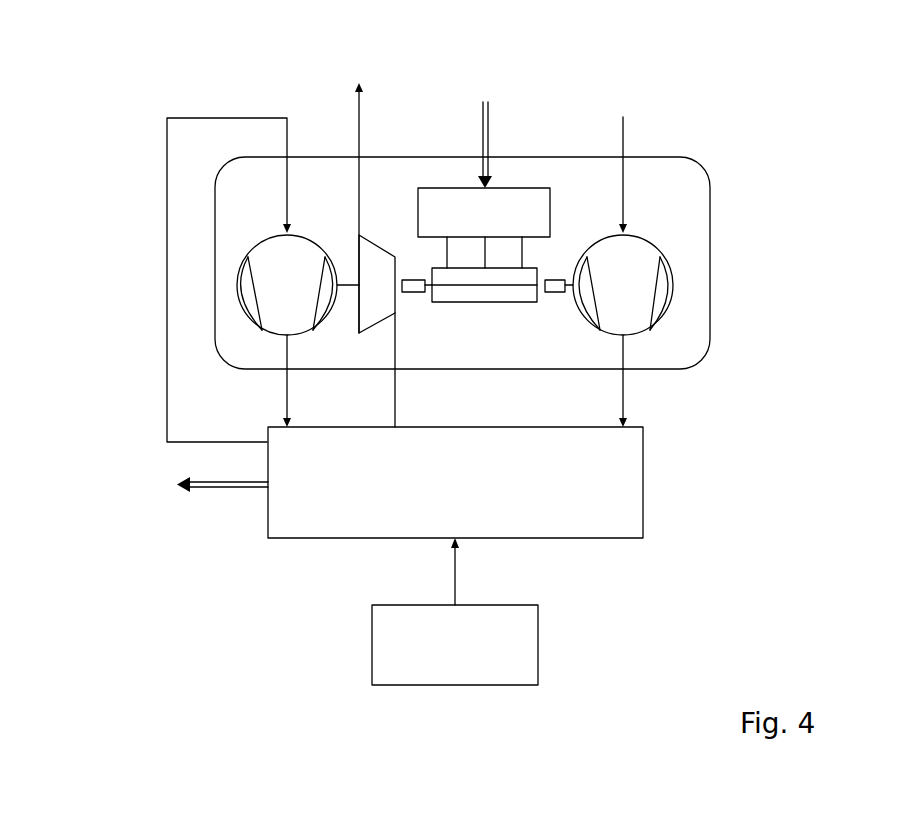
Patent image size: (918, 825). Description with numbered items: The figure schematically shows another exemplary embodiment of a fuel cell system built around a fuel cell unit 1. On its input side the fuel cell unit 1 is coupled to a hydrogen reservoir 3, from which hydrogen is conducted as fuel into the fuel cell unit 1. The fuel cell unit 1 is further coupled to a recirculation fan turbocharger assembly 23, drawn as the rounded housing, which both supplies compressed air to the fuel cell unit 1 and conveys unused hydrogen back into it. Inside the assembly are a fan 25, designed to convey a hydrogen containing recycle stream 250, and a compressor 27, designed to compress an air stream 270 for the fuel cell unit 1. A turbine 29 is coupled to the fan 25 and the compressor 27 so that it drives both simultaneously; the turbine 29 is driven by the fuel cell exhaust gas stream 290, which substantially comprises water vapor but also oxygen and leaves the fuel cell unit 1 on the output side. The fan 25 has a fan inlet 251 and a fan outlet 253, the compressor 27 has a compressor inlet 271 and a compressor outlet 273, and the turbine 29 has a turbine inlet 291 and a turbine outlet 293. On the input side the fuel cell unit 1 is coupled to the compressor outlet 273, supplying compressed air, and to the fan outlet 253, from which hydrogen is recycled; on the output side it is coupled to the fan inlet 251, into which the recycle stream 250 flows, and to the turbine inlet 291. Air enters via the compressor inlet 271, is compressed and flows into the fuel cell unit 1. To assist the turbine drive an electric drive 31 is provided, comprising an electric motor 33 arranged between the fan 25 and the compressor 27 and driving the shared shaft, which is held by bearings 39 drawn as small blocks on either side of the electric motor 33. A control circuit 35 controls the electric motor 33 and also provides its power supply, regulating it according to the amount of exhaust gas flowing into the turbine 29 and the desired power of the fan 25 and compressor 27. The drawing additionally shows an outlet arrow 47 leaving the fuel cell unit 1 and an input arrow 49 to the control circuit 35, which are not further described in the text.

The fuel cell unit 1 is at (644, 483).
The hydrogen reservoir 3 is at (539, 643).
The recirculation fan turbocharger assembly 23 is at (712, 226).
The fan 25 is at (235, 293).
The compressor 27 is at (666, 261).
The turbine 29 is at (395, 257).
The electric drive 31 is at (560, 190).
The electric motor 33 is at (483, 303).
The control circuit 35 is at (446, 188).
The bearings 39 is at (408, 278).
The output signal 47 is at (210, 488).
The input signal 49 is at (486, 102).
The hydrogen containing recycle stream 250 is at (287, 142).
The fan inlet 251 is at (283, 233).
The fan outlet 253 is at (278, 336).
The air stream 270 is at (625, 400).
The compressor inlet 271 is at (630, 232).
The compressor outlet 273 is at (628, 343).
The fuel cell exhaust gas stream 290 is at (357, 138).
The turbine inlet 291 is at (393, 313).
The turbine outlet 293 is at (359, 235).